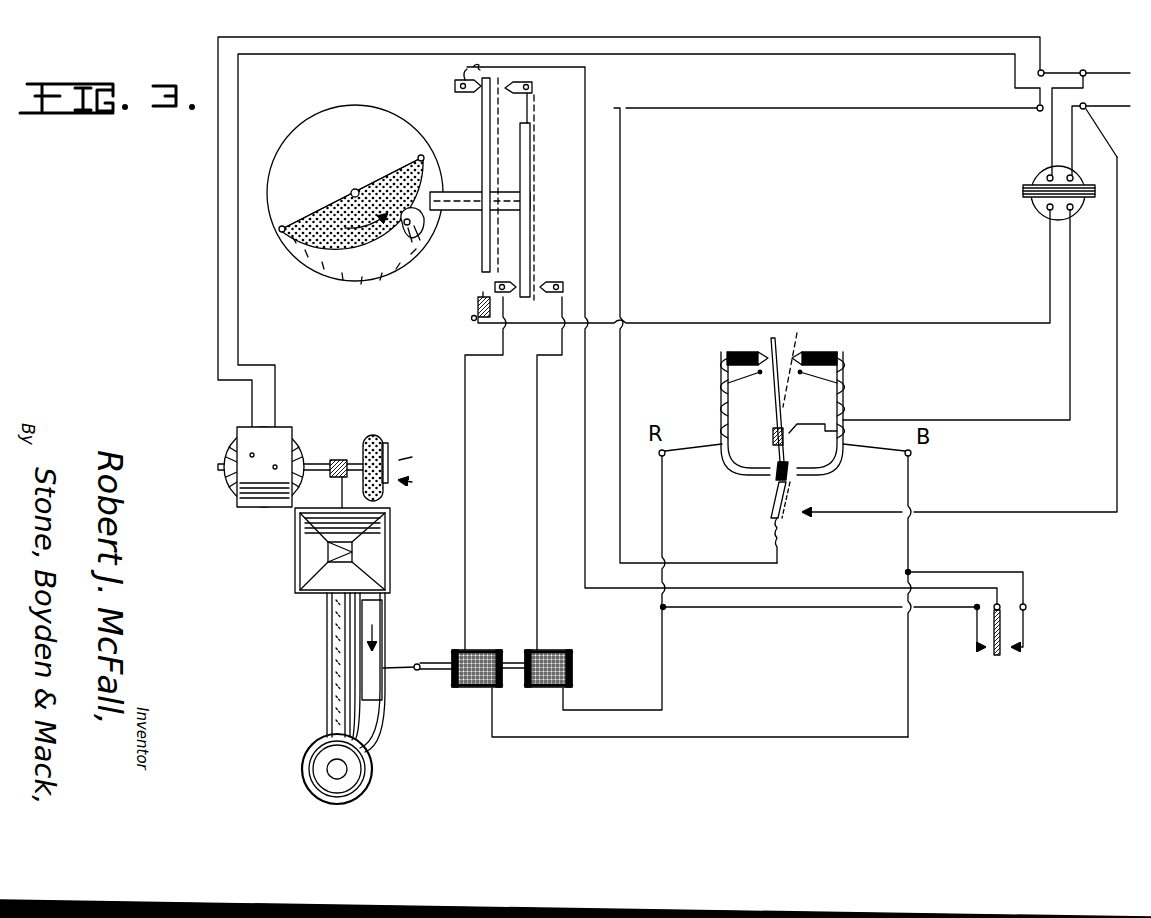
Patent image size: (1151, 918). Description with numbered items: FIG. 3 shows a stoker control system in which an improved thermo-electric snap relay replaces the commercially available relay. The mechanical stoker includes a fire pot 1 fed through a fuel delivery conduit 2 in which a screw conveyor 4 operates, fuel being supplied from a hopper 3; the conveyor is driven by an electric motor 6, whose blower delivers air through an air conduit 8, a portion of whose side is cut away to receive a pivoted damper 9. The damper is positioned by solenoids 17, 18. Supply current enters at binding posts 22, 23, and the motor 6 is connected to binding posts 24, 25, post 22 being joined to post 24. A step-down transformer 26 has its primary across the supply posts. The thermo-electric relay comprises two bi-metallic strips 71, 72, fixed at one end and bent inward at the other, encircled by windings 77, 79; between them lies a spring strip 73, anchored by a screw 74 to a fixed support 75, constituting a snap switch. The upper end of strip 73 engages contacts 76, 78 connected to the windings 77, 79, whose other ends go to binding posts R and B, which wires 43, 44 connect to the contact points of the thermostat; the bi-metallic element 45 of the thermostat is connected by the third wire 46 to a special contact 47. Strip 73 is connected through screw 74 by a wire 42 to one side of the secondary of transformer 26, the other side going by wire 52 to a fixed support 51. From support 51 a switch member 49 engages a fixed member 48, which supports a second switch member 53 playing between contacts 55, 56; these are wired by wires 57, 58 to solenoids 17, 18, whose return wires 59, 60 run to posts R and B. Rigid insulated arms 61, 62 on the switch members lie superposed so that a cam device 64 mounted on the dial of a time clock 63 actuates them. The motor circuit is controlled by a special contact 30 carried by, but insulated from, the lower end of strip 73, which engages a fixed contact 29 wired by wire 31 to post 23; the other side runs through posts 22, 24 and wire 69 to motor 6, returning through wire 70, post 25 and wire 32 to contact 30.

The fire pot 1 is at (307, 758).
The fuel delivery conduit 2 is at (325, 671).
The hopper 3 is at (382, 565).
The screw conveyor 4 is at (355, 550).
The electric motor 6 is at (248, 505).
The air conduit 8 is at (378, 718).
The pivoted damper 9 is at (386, 656).
The solenoid 17 is at (553, 648).
The solenoid 18 is at (488, 648).
The binding post 22 is at (1087, 70).
The binding post 23 is at (1087, 103).
The binding post 24 is at (1045, 70).
The binding post 25 is at (1040, 112).
The step-down transformer 26 is at (1046, 180).
The fixed contact 29 is at (806, 508).
The special contact 30 is at (770, 522).
The wire 31 is at (1006, 506).
The wire 32 is at (890, 110).
The conductor 42 is at (1060, 359).
The wire 43 is at (836, 608).
The wire 44 is at (983, 566).
The bi-metallic element 45 is at (1001, 615).
The third wire 46 is at (840, 584).
The special contact 47 is at (455, 84).
The fixed member 48 is at (534, 90).
The switch member 49 is at (482, 124).
The fixed support 51 is at (476, 304).
The wire 52 is at (973, 318).
The switch member 53 is at (532, 178).
The contact 55 is at (556, 282).
The contact 56 is at (500, 282).
The wire 57 is at (539, 590).
The wire 58 is at (468, 552).
The wire 59 is at (665, 673).
The wire 60 is at (860, 737).
The rigid arm 61 is at (460, 192).
The rigid arm 62 is at (504, 205).
The time clock 63 is at (362, 112).
The cam device 64 is at (424, 230).
The wire 69 is at (216, 246).
The wire 70 is at (238, 283).
The bi-metallic strip 71 is at (720, 381).
The bi-metallic strip 72 is at (845, 371).
The spring strip 73 is at (778, 395).
The screw 74 is at (790, 437).
The fixed support 75 is at (773, 436).
The contact 76 is at (763, 352).
The winding 77 is at (720, 406).
The contact 78 is at (800, 352).
The winding 79 is at (845, 400).